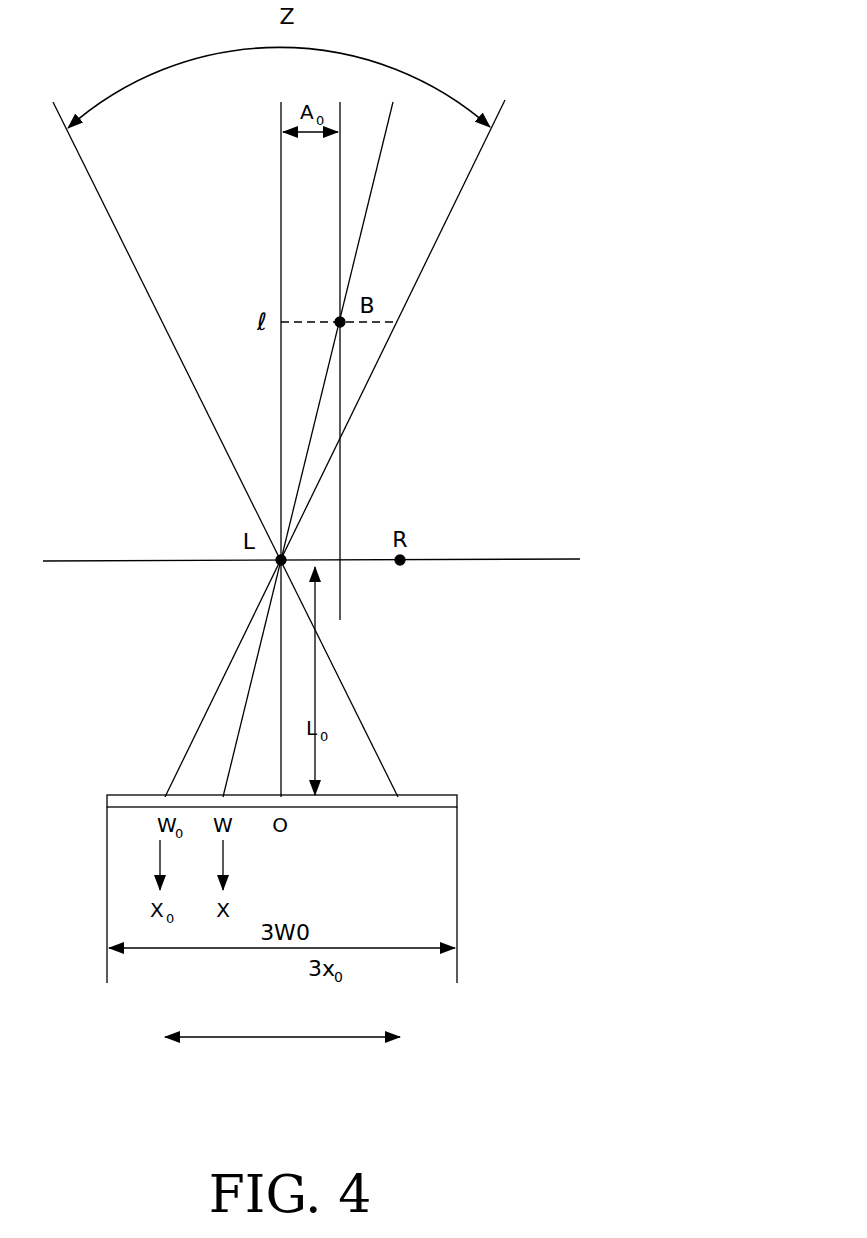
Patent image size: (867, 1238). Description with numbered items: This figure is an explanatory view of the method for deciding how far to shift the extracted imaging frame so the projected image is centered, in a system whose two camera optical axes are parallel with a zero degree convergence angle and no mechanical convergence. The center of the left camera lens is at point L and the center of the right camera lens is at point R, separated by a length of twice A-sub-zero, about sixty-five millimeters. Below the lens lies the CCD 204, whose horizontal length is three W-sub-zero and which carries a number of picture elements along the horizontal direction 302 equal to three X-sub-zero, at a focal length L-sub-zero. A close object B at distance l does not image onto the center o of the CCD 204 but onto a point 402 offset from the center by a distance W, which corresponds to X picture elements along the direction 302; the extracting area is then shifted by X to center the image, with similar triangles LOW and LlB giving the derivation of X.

The CCD 204 is at (457, 800).
The point 402 is at (287, 873).
The horizontal direction 302 is at (280, 1037).